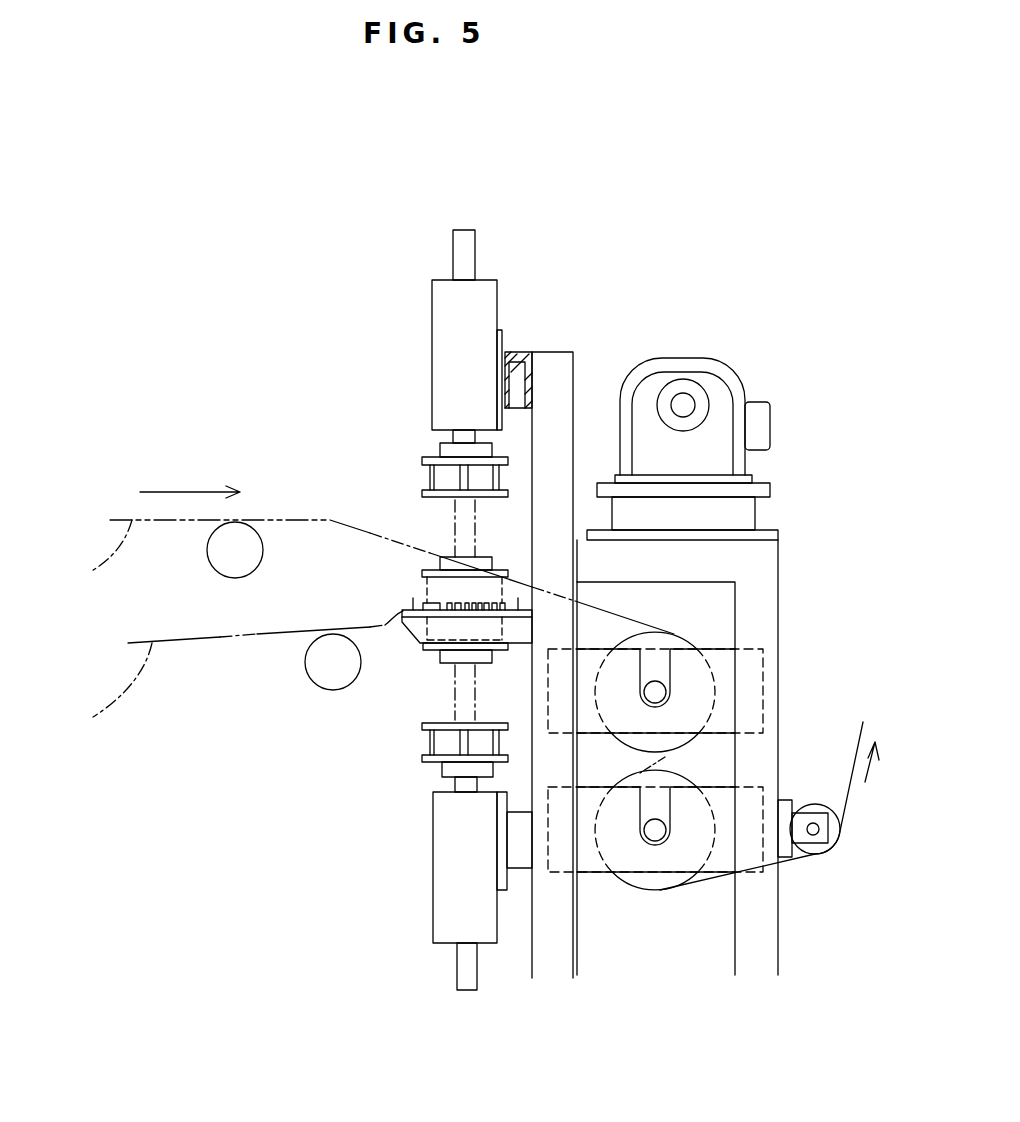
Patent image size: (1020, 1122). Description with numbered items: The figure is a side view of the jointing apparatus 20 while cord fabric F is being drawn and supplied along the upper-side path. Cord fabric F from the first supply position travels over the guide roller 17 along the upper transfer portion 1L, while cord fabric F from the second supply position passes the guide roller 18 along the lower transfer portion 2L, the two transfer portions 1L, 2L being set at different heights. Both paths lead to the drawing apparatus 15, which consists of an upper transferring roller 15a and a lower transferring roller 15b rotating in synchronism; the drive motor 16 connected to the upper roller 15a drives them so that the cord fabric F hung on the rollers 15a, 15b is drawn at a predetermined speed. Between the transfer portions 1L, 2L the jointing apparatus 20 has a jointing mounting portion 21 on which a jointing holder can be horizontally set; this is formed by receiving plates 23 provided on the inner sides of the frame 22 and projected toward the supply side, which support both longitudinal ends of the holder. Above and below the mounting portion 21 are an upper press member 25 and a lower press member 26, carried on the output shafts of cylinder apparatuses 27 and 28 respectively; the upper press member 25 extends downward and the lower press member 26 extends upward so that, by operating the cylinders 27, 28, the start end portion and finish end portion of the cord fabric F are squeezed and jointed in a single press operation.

The drawing apparatus 15 is at (803, 400).
The upper transferring roller 15a is at (677, 636).
The lower transferring roller 15b is at (672, 882).
The drive motor 16 is at (717, 375).
The guide roller 17 is at (224, 537).
The guide roller 18 is at (320, 672).
The jointing apparatus 20 is at (534, 237).
The jointing mounting portion 21 is at (512, 603).
The frame 22 is at (552, 628).
The receiving plate 23 is at (413, 632).
The upper press member 25 is at (438, 469).
The lower press member 26 is at (430, 735).
The cylinder apparatus 27 is at (445, 317).
The cylinder apparatus 28 is at (453, 863).
The transfer portion 1L is at (372, 530).
The transfer portion 2L is at (400, 627).
The cord fabric F is at (465, 688).